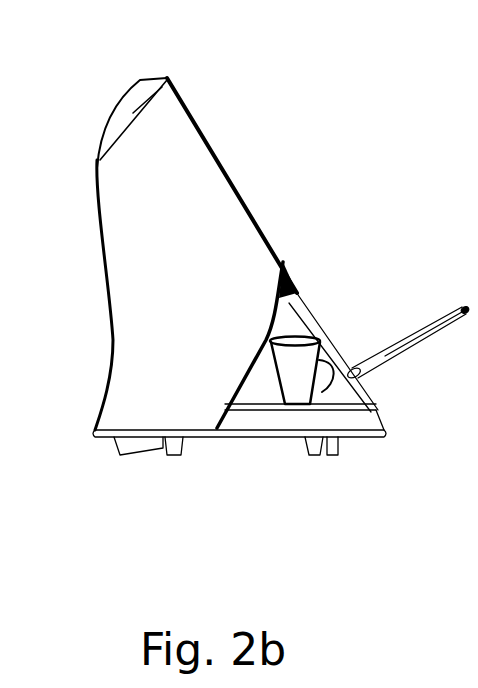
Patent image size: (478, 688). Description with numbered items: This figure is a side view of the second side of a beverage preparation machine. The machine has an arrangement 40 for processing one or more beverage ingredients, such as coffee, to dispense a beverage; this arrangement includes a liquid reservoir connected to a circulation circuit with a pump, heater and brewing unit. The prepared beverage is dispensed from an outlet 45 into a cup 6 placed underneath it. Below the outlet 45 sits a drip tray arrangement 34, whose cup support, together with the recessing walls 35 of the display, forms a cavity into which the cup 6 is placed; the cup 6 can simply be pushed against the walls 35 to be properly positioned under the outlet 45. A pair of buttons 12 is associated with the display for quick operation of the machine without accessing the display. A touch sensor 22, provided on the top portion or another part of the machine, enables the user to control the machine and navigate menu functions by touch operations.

The touch sensor 22 is at (142, 80).
The buttons 12 is at (243, 195).
The arrangement 40 is at (200, 290).
The outlet 45 is at (282, 318).
The walls 35 is at (245, 377).
The drip tray arrangement 34 is at (347, 422).
The cup 6 is at (290, 406).